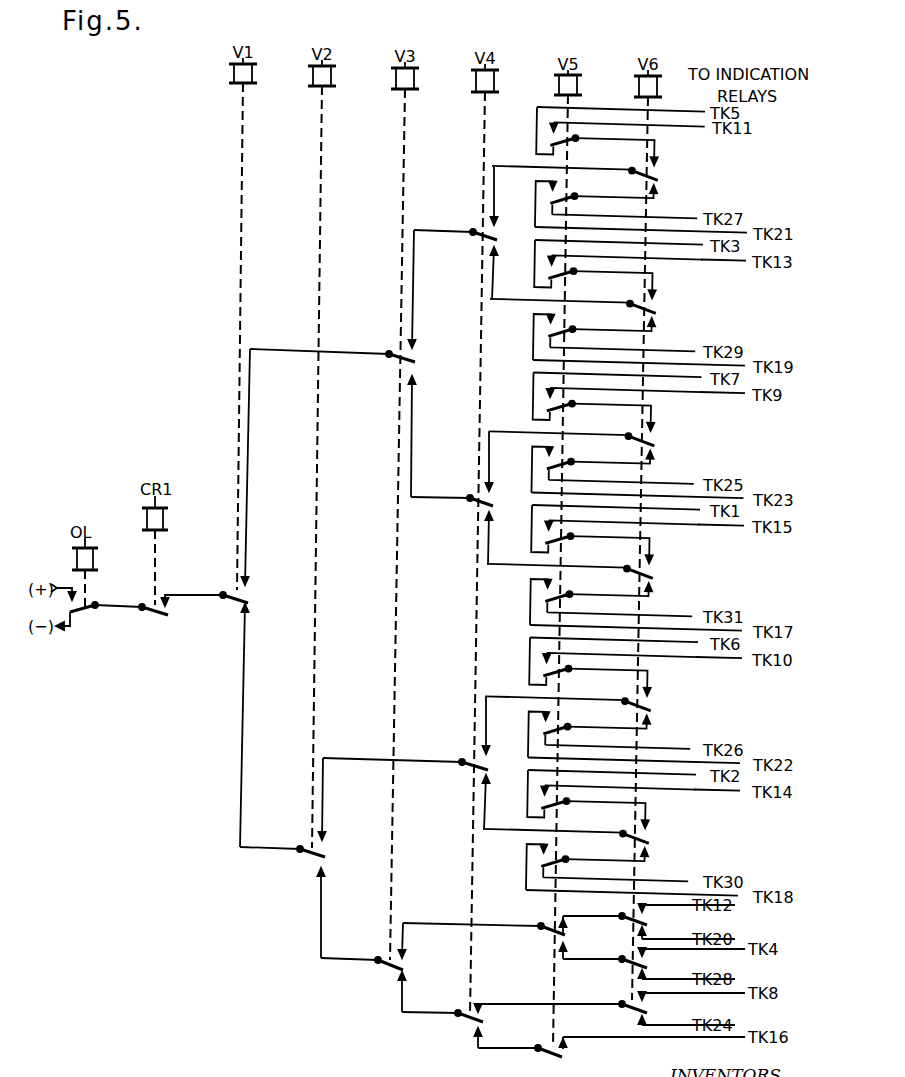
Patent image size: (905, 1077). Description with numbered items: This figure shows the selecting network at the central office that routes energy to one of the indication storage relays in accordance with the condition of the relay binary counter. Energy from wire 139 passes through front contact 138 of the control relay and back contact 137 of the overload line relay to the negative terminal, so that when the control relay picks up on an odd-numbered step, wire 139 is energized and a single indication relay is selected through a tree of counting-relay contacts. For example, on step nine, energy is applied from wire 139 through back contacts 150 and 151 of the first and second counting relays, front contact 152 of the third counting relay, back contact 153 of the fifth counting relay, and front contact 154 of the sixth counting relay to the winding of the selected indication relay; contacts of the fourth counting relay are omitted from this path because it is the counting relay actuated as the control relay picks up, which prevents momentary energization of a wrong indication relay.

The back contact of relay OL 137 is at (87, 604).
The front contact of relay CR1 138 is at (153, 616).
The wire 139 is at (191, 595).
The back contact of relay V1 150 is at (230, 601).
The back contact of relay V2 151 is at (308, 856).
The front contact of relay V3 152 is at (387, 964).
The back contact of relay V5 153 is at (548, 931).
The front contact of relay V6 154 is at (627, 965).